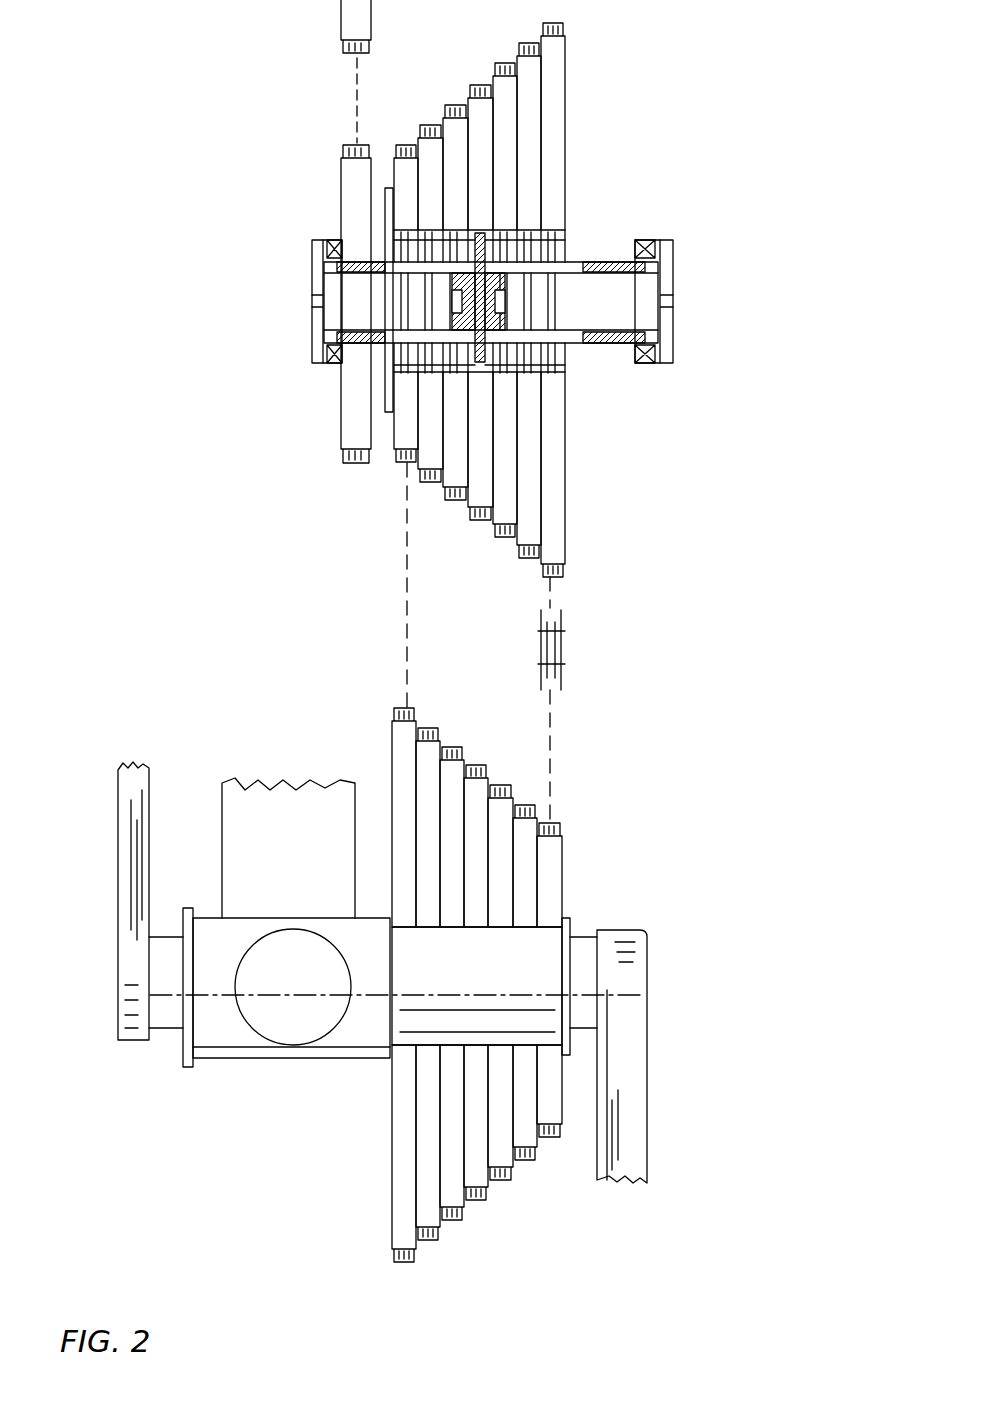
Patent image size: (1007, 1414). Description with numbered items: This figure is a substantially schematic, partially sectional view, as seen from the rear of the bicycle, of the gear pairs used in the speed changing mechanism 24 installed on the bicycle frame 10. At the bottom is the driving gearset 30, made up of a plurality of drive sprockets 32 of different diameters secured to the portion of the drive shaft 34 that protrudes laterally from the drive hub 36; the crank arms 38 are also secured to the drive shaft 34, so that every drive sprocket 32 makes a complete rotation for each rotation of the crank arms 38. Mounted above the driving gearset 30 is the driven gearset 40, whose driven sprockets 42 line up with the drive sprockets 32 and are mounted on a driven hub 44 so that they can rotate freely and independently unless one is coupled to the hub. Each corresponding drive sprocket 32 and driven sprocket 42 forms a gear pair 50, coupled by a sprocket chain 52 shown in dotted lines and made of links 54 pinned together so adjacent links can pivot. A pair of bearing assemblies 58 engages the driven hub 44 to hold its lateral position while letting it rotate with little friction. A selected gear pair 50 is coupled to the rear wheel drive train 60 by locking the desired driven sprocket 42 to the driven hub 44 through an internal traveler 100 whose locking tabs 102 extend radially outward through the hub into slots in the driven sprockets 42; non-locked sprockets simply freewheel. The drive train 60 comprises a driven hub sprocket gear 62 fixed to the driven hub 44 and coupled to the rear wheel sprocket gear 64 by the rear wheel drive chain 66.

The bicycle frame 10 is at (242, 775).
The speed changing mechanism 24 is at (690, 612).
The driving gearset 30 is at (605, 858).
The drive sprockets 32 is at (425, 812).
The drive shaft 34 is at (168, 1013).
The drive hub 36 is at (235, 1058).
The crank arms 38 is at (128, 890).
The driven gearset 40 is at (607, 85).
The driven sprockets 42 is at (553, 165).
The driven hub 44 is at (607, 247).
The gear pair 50 is at (565, 530).
The sprocket chain 52 is at (405, 530).
The links 54 is at (562, 648).
The bearing assemblies 58 is at (312, 272).
The rear wheel drive train 60 is at (332, 97).
The driven hub sprocket gear 62 is at (342, 180).
The rear wheel sprocket gear 64 is at (342, 25).
The rear wheel drive chain 66 is at (357, 82).
The internal traveler 100 is at (482, 290).
The locking tabs 102 is at (482, 362).